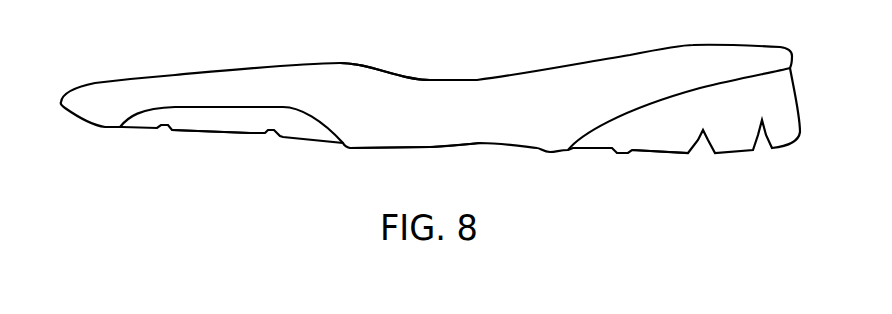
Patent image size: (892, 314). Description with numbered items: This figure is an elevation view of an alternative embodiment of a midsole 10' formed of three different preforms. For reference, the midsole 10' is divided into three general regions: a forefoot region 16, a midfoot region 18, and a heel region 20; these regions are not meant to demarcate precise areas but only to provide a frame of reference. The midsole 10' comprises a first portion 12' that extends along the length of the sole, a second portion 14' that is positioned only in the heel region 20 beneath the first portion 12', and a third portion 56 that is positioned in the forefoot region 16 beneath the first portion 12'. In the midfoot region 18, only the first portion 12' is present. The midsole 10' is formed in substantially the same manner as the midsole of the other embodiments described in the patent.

The midsole 10' is at (430, 92).
The first portion 12' is at (385, 56).
The second portion 14' is at (660, 162).
The forefoot region 16 is at (217, 98).
The midfoot region 18 is at (457, 116).
The heel region 20 is at (708, 81).
The third portion 56 is at (253, 125).